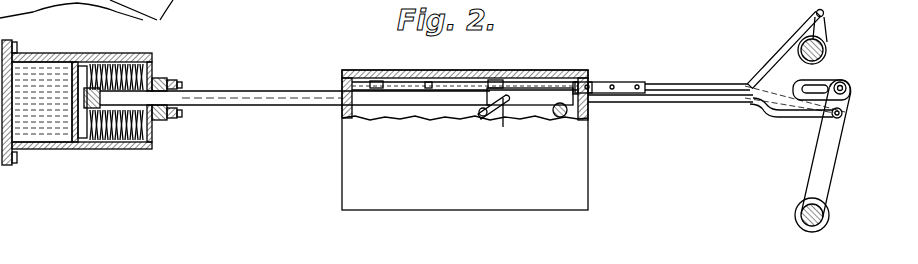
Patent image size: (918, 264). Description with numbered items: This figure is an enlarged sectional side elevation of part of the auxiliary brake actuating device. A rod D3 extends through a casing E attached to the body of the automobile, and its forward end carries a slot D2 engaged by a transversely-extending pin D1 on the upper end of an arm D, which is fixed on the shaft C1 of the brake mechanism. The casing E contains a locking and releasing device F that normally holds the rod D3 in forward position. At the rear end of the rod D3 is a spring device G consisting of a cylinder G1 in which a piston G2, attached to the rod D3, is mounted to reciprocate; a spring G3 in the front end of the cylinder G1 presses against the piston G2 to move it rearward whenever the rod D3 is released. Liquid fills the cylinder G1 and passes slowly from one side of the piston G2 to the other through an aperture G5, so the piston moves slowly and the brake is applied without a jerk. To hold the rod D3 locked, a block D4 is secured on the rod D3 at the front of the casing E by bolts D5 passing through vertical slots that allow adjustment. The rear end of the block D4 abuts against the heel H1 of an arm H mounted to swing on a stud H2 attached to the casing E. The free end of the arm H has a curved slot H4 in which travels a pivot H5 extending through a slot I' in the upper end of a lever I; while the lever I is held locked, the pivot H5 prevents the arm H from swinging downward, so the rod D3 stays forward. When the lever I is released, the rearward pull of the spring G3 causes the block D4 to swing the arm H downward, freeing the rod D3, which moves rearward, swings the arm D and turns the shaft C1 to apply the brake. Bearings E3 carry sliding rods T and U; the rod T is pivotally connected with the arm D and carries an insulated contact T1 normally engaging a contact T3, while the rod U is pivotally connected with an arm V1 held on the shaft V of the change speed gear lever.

The spring device G is at (92, 102).
The cylinder G1 is at (53, 148).
The piston G2 is at (80, 60).
The spring G3 is at (113, 141).
The aperture G5 is at (92, 62).
The rod D3 is at (265, 93).
The casing E is at (357, 168).
The bearings E3 is at (375, 80).
The rod T is at (412, 82).
The contact T3 is at (438, 82).
The slot I' is at (492, 69).
The locking and releasing device F is at (527, 80).
The lever I is at (473, 119).
The pivot H5 is at (483, 116).
The curved slot H4 is at (503, 127).
The stud H2 is at (558, 118).
The arm H is at (584, 78).
The heel H1 is at (588, 80).
The block D4 is at (630, 82).
The bolts D5 is at (612, 93).
The rod U is at (773, 50).
The arm V1 is at (827, 20).
The shaft V is at (826, 50).
The slot D2 is at (837, 79).
The pin D1 is at (850, 88).
The insulated contact T1 is at (783, 120).
The arm D is at (830, 170).
The shaft C1 is at (796, 214).